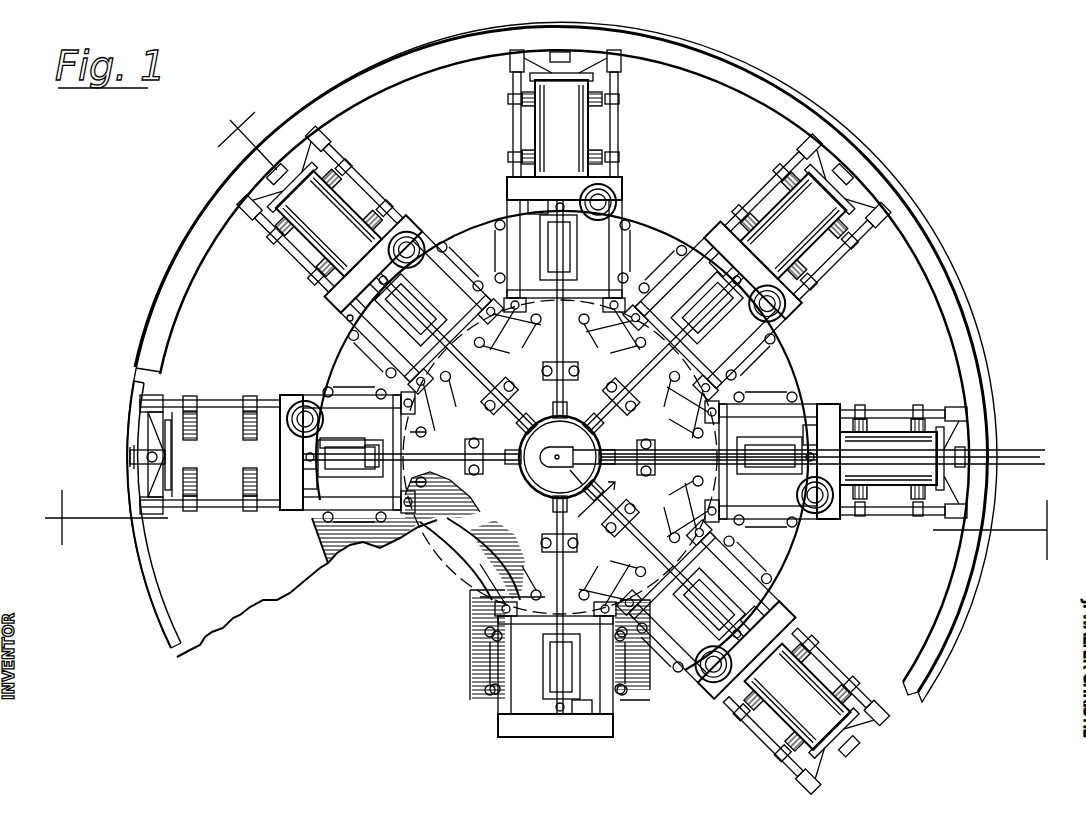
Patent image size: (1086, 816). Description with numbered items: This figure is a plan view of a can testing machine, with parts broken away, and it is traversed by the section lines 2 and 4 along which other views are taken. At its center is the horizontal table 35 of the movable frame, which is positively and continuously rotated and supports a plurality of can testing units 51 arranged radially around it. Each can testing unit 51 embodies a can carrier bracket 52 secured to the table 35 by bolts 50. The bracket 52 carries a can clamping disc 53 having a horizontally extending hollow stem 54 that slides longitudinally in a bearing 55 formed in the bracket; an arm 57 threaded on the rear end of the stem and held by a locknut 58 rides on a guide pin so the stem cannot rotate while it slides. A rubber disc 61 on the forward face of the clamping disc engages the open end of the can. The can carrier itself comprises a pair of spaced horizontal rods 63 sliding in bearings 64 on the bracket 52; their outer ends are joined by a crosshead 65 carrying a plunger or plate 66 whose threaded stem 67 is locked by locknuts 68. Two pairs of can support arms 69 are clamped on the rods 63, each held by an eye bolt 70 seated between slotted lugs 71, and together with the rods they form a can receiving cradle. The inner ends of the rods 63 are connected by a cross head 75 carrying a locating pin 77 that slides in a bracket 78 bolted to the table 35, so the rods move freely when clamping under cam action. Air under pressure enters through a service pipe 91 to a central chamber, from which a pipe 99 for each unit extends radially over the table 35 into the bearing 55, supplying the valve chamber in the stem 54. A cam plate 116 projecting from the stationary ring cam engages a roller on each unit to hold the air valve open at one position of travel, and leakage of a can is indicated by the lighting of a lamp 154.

The section line 2- 2 is at (538, 529).
The section line 4- 4 is at (416, 314).
The table 35 is at (470, 520).
The bolts 50 is at (348, 352).
The can testing unit 51 is at (379, 177).
The can carrier bracket 52 is at (622, 242).
The can clamping disc 53 is at (388, 221).
The hollow stem 54 is at (302, 404).
The bearing 55 is at (350, 468).
The arm 57 is at (346, 438).
The locknut 58 is at (372, 468).
The rubber disc 61 is at (360, 250).
The horizontal rods 63 is at (226, 400).
The bearings 64 is at (304, 508).
The crosshead 65 is at (138, 452).
The plunger or plate 66 is at (172, 460).
The threaded stem 67 is at (136, 458).
The locknuts 68 is at (138, 460).
The can support arms 69 is at (198, 440).
The eye bolt 70 is at (247, 511).
The slotted lugs 71 is at (253, 511).
The cross head 75 is at (418, 436).
The locating pin 77 is at (478, 452).
The bracket 78 is at (533, 520).
The service pipe 91 is at (1018, 457).
The pipe 99 is at (575, 244).
The cam plate 116 is at (346, 320).
The lamp 154 is at (615, 190).